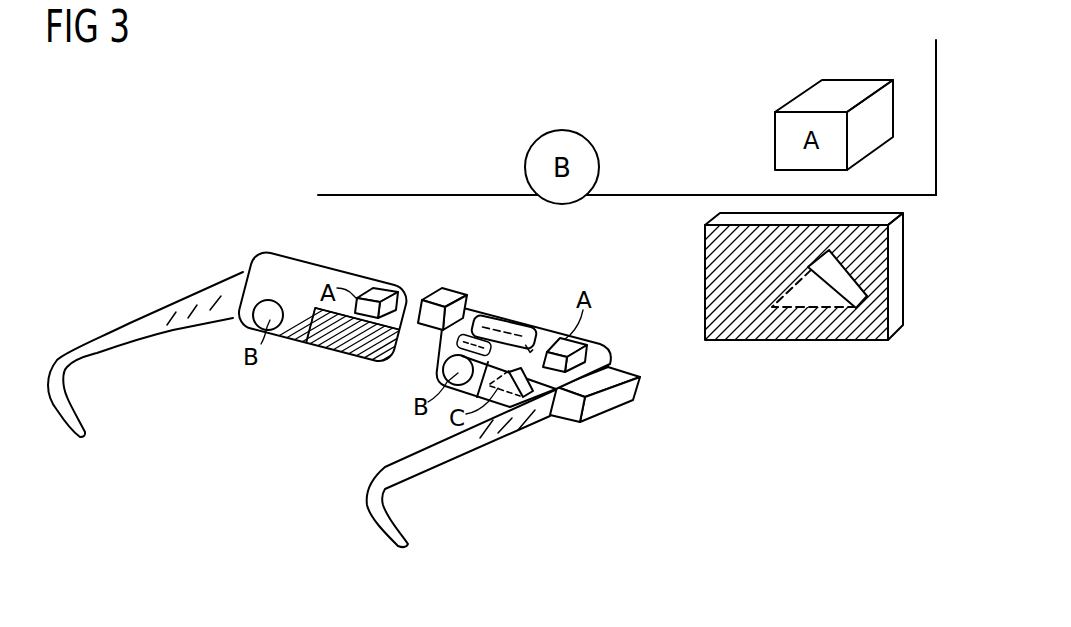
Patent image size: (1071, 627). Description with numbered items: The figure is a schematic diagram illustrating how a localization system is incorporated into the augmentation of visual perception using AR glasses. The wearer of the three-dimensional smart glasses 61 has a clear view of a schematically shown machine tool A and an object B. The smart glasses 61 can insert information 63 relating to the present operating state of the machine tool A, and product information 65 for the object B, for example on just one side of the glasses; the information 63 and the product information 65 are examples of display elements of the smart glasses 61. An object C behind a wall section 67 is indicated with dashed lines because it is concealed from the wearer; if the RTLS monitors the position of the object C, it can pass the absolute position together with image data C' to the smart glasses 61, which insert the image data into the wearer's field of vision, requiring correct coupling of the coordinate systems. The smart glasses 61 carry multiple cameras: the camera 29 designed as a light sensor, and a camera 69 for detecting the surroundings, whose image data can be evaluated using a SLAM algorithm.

The camera 29 is at (440, 292).
The smart glasses 61 is at (450, 455).
The information 63 is at (500, 326).
The product information 65 is at (436, 368).
The wall section 67 is at (893, 326).
The camera 69 is at (601, 406).